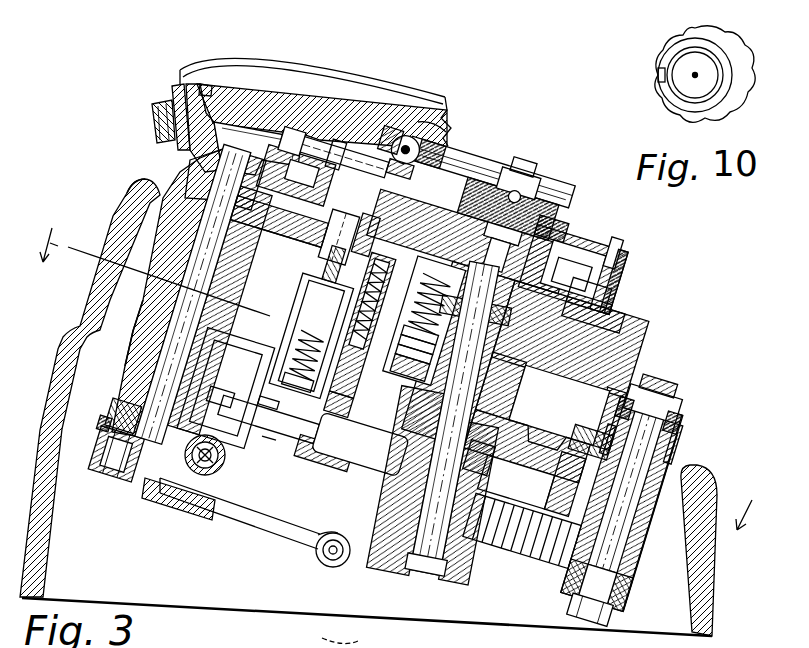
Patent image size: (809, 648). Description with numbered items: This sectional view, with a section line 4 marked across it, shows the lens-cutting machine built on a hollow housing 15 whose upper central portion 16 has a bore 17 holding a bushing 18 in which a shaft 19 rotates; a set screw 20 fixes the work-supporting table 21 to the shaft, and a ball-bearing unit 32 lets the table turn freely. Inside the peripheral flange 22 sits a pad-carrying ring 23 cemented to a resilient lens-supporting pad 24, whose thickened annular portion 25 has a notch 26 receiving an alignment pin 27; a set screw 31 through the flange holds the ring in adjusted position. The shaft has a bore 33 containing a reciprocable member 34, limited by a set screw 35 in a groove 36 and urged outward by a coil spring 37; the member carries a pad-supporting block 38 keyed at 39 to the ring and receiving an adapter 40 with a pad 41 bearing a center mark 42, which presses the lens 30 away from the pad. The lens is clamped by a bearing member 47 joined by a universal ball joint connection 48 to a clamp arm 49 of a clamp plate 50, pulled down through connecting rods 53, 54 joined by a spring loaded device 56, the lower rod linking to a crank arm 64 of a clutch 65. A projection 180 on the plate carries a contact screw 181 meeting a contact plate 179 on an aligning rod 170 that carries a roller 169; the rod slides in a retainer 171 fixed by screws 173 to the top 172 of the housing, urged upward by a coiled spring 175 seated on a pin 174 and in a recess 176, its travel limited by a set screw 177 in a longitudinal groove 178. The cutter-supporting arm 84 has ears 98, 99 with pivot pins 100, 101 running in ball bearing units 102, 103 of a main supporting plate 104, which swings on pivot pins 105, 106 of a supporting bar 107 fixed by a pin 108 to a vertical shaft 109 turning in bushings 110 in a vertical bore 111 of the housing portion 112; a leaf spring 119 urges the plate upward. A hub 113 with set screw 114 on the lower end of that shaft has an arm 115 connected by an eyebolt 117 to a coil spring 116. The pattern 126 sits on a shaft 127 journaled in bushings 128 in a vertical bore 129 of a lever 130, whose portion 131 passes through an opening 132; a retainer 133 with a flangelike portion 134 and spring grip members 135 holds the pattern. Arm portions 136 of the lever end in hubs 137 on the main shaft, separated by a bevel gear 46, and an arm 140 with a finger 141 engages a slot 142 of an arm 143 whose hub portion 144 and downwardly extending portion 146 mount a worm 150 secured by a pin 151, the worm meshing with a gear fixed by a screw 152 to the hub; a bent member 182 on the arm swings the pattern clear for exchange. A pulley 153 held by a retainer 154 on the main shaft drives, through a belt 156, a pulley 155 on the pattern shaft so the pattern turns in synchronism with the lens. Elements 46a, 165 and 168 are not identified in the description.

In FIG. 3, the section line 4- 4 is at (400, 367).
In FIG. 3, the housing 15 is at (55, 340).
In FIG. 3, the upper central portion 16 is at (578, 355).
In FIG. 3, the bore 17 is at (572, 386).
In FIG. 3, the bushing 18 is at (572, 366).
In FIG. 3, the shaft 19 is at (405, 440).
In FIG. 3, the set screw 20 is at (572, 340).
In FIG. 3, the work-supporting table 21 is at (616, 320).
In FIG. 3, the peripheral flange 22 is at (618, 290).
In FIG. 3, the pad-carrying ring 23 is at (562, 270).
In FIG. 10, the pad-carrying ring 23 is at (668, 97).
In FIG. 3, the lens-supporting pad 24 is at (607, 270).
In FIG. 10, the lens-supporting pad 24 is at (725, 106).
In FIG. 3, the thickened annular portion 25 is at (600, 248).
In FIG. 3, the notch 26 is at (582, 270).
In FIG. 3, the alignment pin 27 is at (612, 306).
In FIG. 3, the lens 30 is at (562, 250).
In FIG. 3, the set screw 31 is at (620, 300).
In FIG. 3, the ball-bearing unit 32 is at (600, 338).
In FIG. 3, the bore 33 is at (444, 342).
In FIG. 3, the reciprocable member 34 is at (442, 328).
In FIG. 3, the set screw 35 is at (436, 300).
In FIG. 3, the groove 36 is at (440, 315).
In FIG. 3, the coil spring 37 is at (446, 356).
In FIG. 3, the pad-supporting block 38 is at (532, 230).
In FIG. 10, the pad-supporting block 38 is at (672, 62).
In FIG. 3, the key 39 is at (482, 205).
In FIG. 10, the key 39 is at (660, 84).
In FIG. 3, the adapter 40 is at (502, 210).
In FIG. 3, the pad 41 is at (536, 236).
In FIG. 10, the pad 41 is at (706, 79).
In FIG. 10, the center mark 42 is at (698, 73).
In FIG. 3, the bevel gear 46 is at (528, 462).
In FIG. 3, the passage branch 46a is at (495, 462).
In FIG. 3, the bearing member 47 is at (548, 208).
In FIG. 3, the universal ball joint connection 48 is at (528, 213).
In FIG. 3, the clamp arm 49 is at (522, 190).
In FIG. 3, the clamp plate 50 is at (496, 200).
In FIG. 3, the upper connecting rod 53 is at (340, 188).
In FIG. 3, the lower connecting rod 54 is at (305, 406).
In FIG. 3, the spring loaded device 56 is at (300, 302).
In FIG. 3, the crank arm 64 is at (255, 380).
In FIG. 3, the clutch 65 is at (134, 331).
In FIG. 3, the cutter-supporting arm 84 is at (442, 100).
In FIG. 3, the ear 98 is at (158, 116).
In FIG. 3, the ear 99 is at (350, 160).
In FIG. 3, the pivot pin 100 is at (170, 103).
In FIG. 3, the pivot pin 101 is at (362, 150).
In FIG. 3, the ball bearing unit 102 is at (207, 84).
In FIG. 3, the ball bearing unit 103 is at (335, 148).
In FIG. 3, the main supporting plate 104 is at (308, 110).
In FIG. 3, the pivot pin 105 is at (195, 147).
In FIG. 3, the pivot pin 106 is at (305, 186).
In FIG. 3, the supporting bar 107 is at (285, 196).
In FIG. 3, the pin 108 is at (198, 168).
In FIG. 3, the shaft 109 is at (140, 196).
In FIG. 3, the bushings 110 is at (168, 214).
In FIG. 3, the vertical bore 111 is at (160, 290).
In FIG. 3, the housing portion 112 is at (170, 256).
In FIG. 3, the hub 113 is at (100, 477).
In FIG. 3, the set screw 114 is at (100, 453).
In FIG. 3, the arm 115 is at (238, 520).
In FIG. 3, the coil spring 116 is at (315, 560).
In FIG. 3, the eyebolt 117 is at (333, 556).
In FIG. 3, the leaf spring 119 is at (268, 135).
In FIG. 3, the pattern 126 is at (694, 430).
In FIG. 3, the shaft 127 is at (684, 392).
In FIG. 3, the bushings 128 is at (676, 451).
In FIG. 3, the vertical bore 129 is at (645, 510).
In FIG. 3, the lever 130 is at (670, 560).
In FIG. 3, the portion 131 is at (686, 460).
In FIG. 3, the opening 132 is at (612, 447).
In FIG. 3, the retainer 133 is at (692, 406).
In FIG. 3, the flangelike portion 134 is at (692, 445).
In FIG. 3, the spring grip members 135 is at (634, 395).
In FIG. 3, the arm portions 136 is at (566, 466).
In FIG. 3, the hubs 137 is at (440, 378).
In FIG. 3, the arm 140 is at (357, 458).
In FIG. 3, the finger 141 is at (320, 455).
In FIG. 3, the slot 142 is at (303, 448).
In FIG. 3, the arm 143 is at (268, 447).
In FIG. 3, the hub portion 144 is at (125, 400).
In FIG. 3, the downwardly extending portion 146 is at (226, 468).
In FIG. 3, the worm 150 is at (235, 484).
In FIG. 3, the pin 151 is at (108, 416).
In FIG. 3, the screw 152 is at (165, 472).
In FIG. 3, the pulley 153 is at (410, 506).
In FIG. 3, the retainer 154 is at (434, 572).
In FIG. 3, the pulley 155 is at (630, 608).
In FIG. 3, the belt 156 is at (505, 560).
In FIG. 3, the lip 165 is at (442, 130).
In FIG. 3, the stop 168 is at (405, 150).
In FIG. 3, the roller 169 is at (360, 218).
In FIG. 3, the aligning rod 170 is at (345, 220).
In FIG. 3, the retainer 171 is at (312, 312).
In FIG. 3, the top 172 is at (298, 246).
In FIG. 3, the screws 173 is at (326, 273).
In FIG. 3, the pin 174 is at (325, 345).
In FIG. 3, the coiled spring 175 is at (325, 325).
In FIG. 3, the recess 176 is at (352, 290).
In FIG. 3, the set screw 177 is at (420, 292).
In FIG. 3, the longitudinal groove 178 is at (372, 345).
In FIG. 3, the contact plate 179 is at (466, 185).
In FIG. 3, the projection 180 is at (420, 155).
In FIG. 3, the contact screw 181 is at (430, 166).
In FIG. 3, the bent member 182 is at (255, 378).